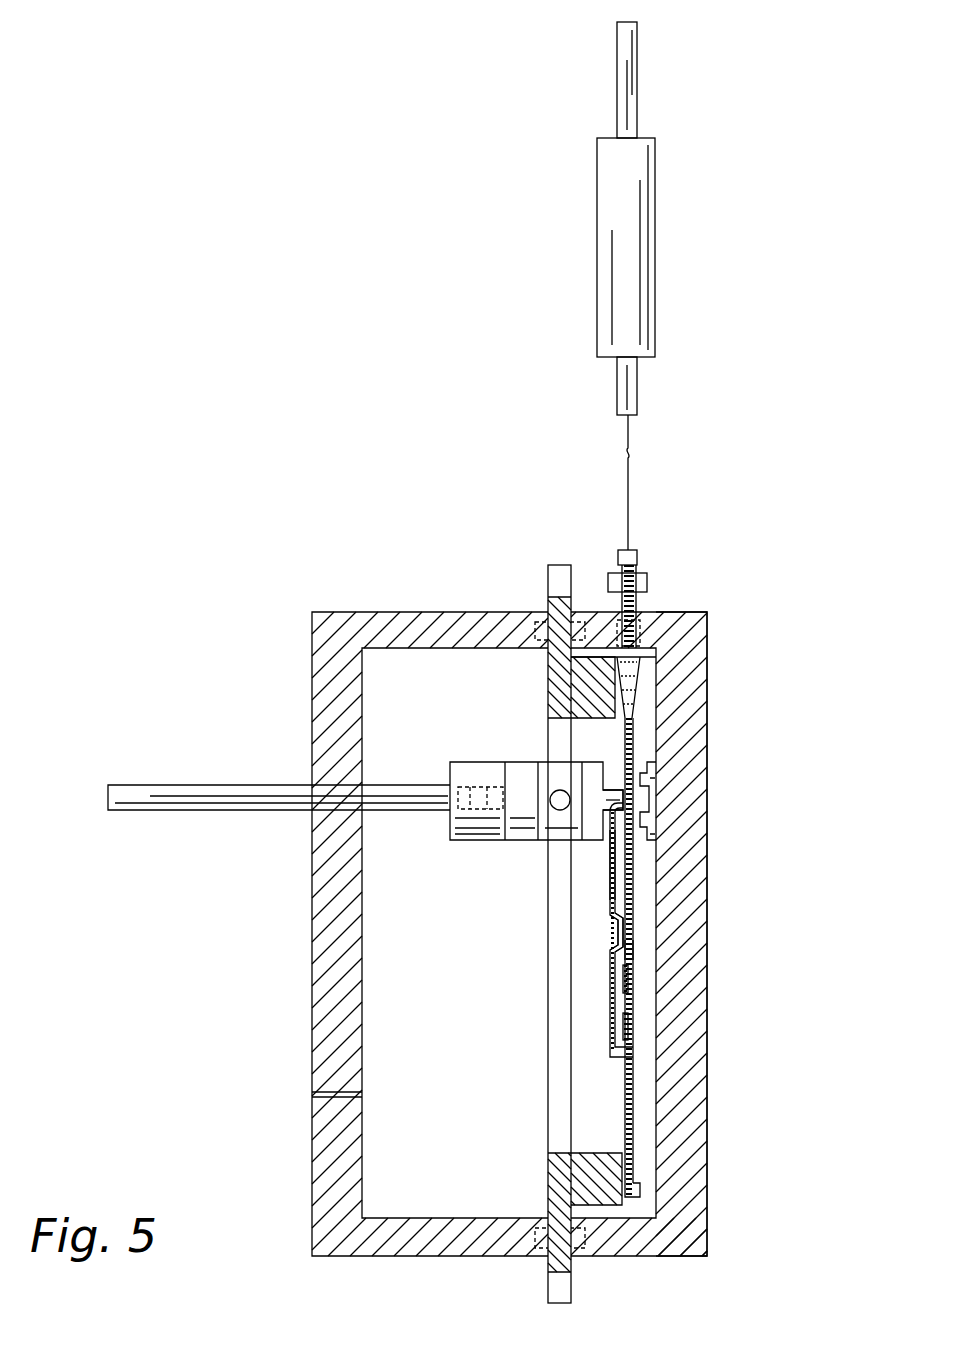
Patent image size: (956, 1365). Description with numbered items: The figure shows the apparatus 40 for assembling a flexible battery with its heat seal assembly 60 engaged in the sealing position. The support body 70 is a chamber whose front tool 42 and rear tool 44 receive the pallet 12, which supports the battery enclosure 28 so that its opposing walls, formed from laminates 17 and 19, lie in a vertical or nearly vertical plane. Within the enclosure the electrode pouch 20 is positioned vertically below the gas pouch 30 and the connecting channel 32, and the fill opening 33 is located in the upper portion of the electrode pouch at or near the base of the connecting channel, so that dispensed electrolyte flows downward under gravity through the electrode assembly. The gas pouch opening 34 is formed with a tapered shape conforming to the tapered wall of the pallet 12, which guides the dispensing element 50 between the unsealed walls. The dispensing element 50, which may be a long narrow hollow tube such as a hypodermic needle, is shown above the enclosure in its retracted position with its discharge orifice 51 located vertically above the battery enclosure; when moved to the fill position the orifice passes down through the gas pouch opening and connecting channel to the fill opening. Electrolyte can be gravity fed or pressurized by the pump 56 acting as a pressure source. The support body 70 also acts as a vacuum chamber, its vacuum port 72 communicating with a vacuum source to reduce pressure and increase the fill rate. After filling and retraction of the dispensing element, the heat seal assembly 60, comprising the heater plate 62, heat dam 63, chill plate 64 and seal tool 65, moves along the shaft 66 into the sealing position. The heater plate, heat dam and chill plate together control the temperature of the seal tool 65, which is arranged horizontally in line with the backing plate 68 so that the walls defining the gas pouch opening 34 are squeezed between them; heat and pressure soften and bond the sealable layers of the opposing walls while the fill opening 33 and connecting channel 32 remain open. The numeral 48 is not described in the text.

The pallet 12 is at (548, 670).
The laminate 17 is at (612, 880).
The laminate 19 is at (633, 873).
The electrode pouch 20 is at (622, 1005).
The battery enclosure 28 is at (606, 940).
The gas pouch 30 is at (633, 848).
The connecting channel 32 is at (628, 933).
The fill opening 33 is at (633, 950).
The gas pouch opening 34 is at (663, 672).
The apparatus 40 is at (258, 393).
The front tool 42 is at (312, 680).
The rear tool 44 is at (708, 724).
The guide block 48 is at (708, 614).
The dispensing element 50 is at (631, 497).
The discharge orifice 51 is at (620, 550).
The pump 56 is at (597, 262).
The heat seal assembly 60 is at (456, 887).
The heater plate 62 is at (558, 775).
The heat dam 63 is at (520, 778).
The chill plate 64 is at (480, 838).
The seal tool 65 is at (600, 805).
The shaft 66 is at (200, 786).
The backing plate 68 is at (645, 800).
The support body 70 is at (470, 1137).
The vacuum port 72 is at (312, 1094).